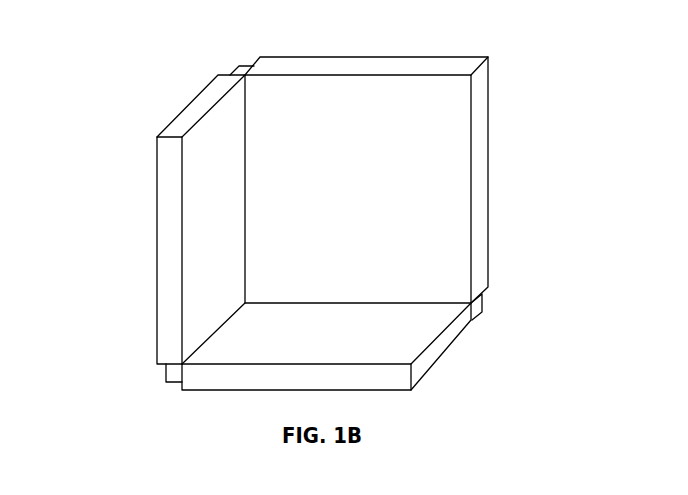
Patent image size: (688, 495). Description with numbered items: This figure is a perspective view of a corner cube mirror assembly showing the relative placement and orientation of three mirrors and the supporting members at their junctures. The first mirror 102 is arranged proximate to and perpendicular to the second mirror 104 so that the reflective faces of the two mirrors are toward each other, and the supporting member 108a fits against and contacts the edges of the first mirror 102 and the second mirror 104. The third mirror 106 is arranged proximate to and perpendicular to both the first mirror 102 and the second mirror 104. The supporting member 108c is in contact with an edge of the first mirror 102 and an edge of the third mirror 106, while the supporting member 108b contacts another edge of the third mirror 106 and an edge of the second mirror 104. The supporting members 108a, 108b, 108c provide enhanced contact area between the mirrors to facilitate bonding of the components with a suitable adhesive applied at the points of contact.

The first mirror 102 is at (157, 163).
The second mirror 104 is at (450, 350).
The third mirror 106 is at (488, 107).
The supporting member 108a is at (165, 372).
The supporting member 108b is at (482, 303).
The supporting member 108c is at (237, 64).